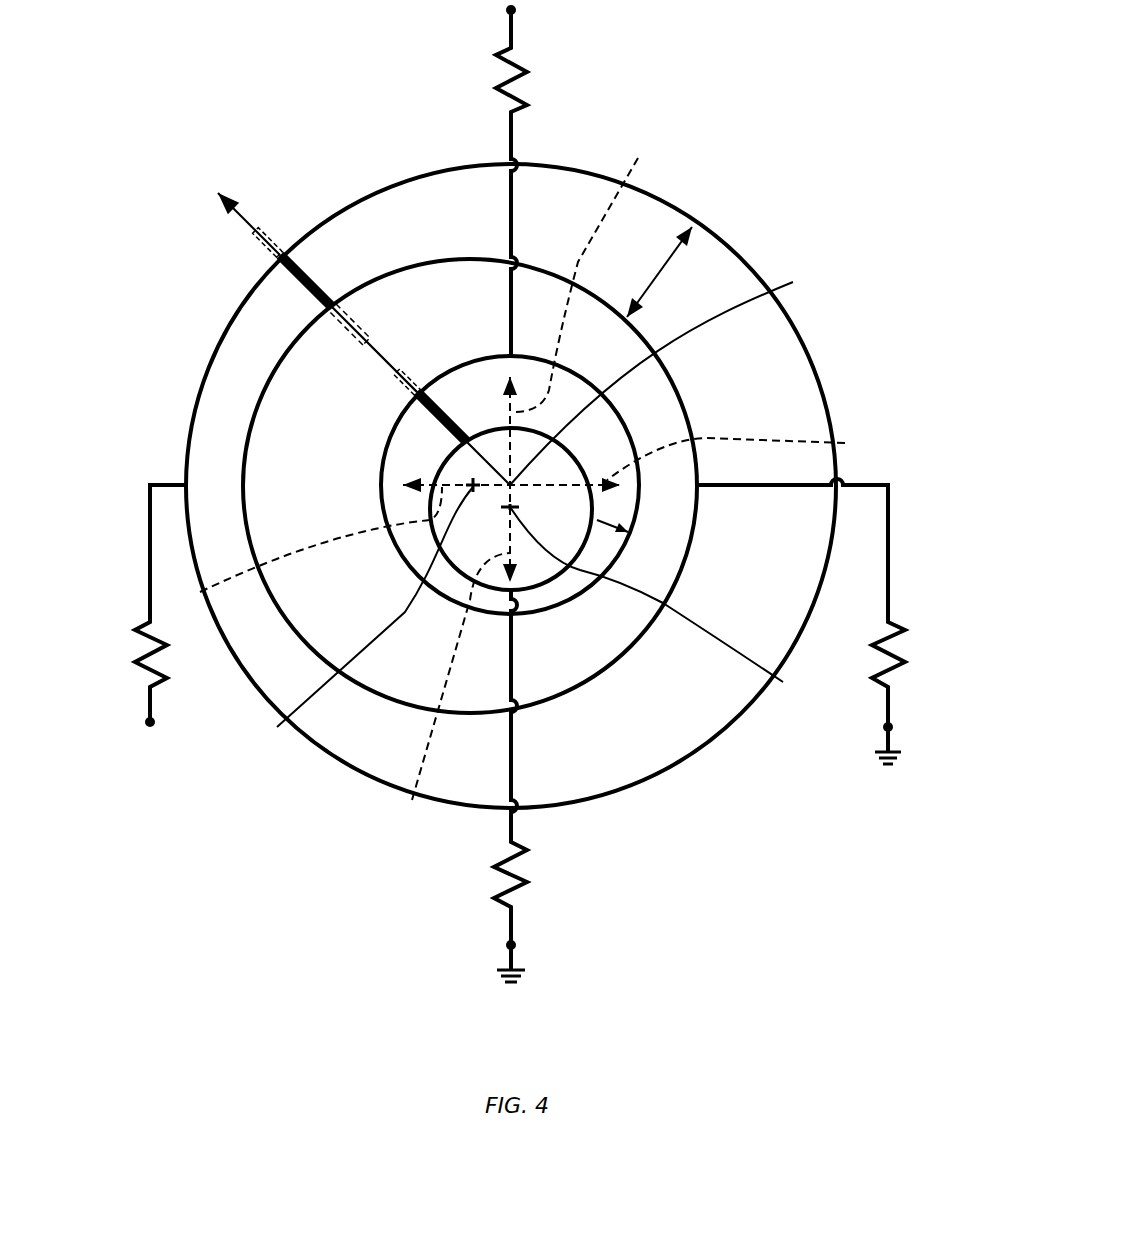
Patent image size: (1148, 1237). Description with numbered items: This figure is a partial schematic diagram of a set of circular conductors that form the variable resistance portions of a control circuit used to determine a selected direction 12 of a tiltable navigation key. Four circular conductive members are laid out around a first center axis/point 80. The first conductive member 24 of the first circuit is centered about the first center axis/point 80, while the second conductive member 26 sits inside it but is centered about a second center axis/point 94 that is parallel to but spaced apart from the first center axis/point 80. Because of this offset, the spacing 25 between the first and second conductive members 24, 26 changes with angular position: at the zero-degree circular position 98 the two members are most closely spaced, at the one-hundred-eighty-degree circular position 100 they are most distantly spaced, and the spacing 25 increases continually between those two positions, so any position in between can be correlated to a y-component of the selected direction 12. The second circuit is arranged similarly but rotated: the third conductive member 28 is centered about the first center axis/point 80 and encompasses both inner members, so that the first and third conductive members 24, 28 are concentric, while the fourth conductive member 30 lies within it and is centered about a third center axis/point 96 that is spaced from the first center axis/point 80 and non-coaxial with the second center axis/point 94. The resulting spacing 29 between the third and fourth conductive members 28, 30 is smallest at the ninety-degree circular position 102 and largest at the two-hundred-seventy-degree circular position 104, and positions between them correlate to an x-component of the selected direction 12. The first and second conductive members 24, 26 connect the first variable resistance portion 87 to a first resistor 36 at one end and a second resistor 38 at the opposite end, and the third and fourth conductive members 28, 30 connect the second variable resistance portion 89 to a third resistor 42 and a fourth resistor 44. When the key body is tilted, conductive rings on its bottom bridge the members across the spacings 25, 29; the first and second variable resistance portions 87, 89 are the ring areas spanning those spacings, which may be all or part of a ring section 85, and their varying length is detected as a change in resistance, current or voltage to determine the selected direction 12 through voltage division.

The selected direction 12 is at (258, 215).
The first conductive member 24 is at (590, 383).
The spacing 25 is at (612, 522).
The second conductive member 26 is at (583, 468).
The third conductive member 28 is at (722, 733).
The spacing 29 is at (660, 273).
The fourth conductive member 30 is at (647, 632).
The first resistor 36 is at (492, 77).
The second resistor 38 is at (542, 877).
The third resistor 42 is at (120, 675).
The fourth resistor 44 is at (900, 682).
The first center axis/point 80 is at (665, 371).
The section 85 is at (258, 247).
The first variable resistance portion 87 is at (420, 407).
The second variable resistance portion 89 is at (290, 278).
The second center axis/point 94 is at (660, 603).
The third center axis/point 96 is at (359, 620).
The 0° circular position 98 is at (446, 690).
The 180° circular position 100 is at (591, 270).
The 90° circular position 102 is at (298, 551).
The 270° circular position 104 is at (750, 455).